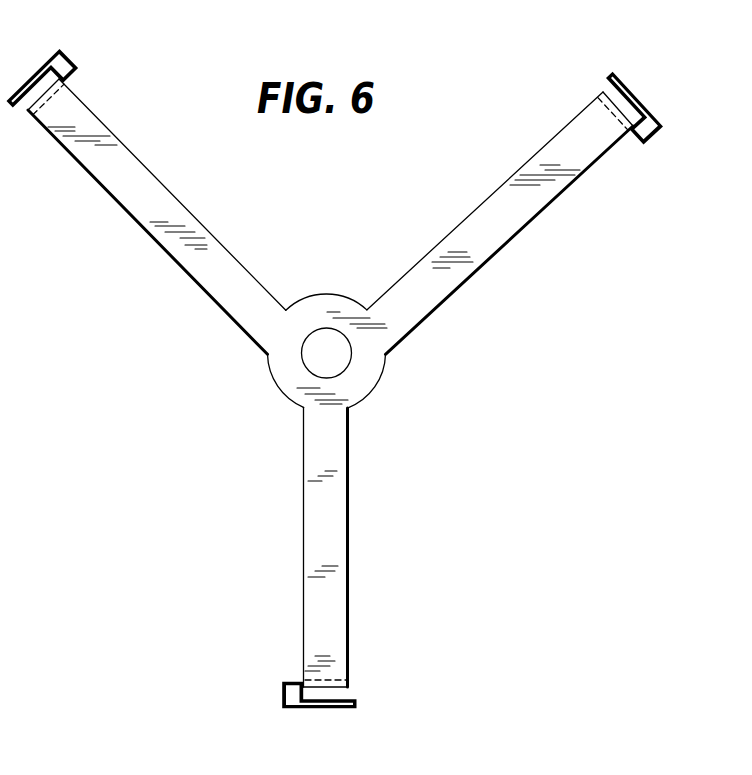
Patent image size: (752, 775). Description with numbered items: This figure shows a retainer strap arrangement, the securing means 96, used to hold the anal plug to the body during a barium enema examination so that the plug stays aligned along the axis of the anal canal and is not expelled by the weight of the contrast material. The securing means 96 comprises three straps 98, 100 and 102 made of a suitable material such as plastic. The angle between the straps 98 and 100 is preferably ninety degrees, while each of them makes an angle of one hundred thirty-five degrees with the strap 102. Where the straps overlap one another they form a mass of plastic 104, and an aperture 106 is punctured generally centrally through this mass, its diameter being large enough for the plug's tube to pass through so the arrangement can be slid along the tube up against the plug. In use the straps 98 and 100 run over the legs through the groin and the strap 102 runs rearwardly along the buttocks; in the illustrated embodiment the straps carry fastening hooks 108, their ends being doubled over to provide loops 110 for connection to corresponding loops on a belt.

The securing means 96 is at (257, 381).
The strap 98 is at (192, 220).
The strap 100 is at (496, 248).
The strap 102 is at (346, 516).
The mass of plastic 104 is at (371, 386).
The aperture 106 is at (336, 330).
The fastening hook 108 is at (41, 58).
The loop 110 is at (623, 130).